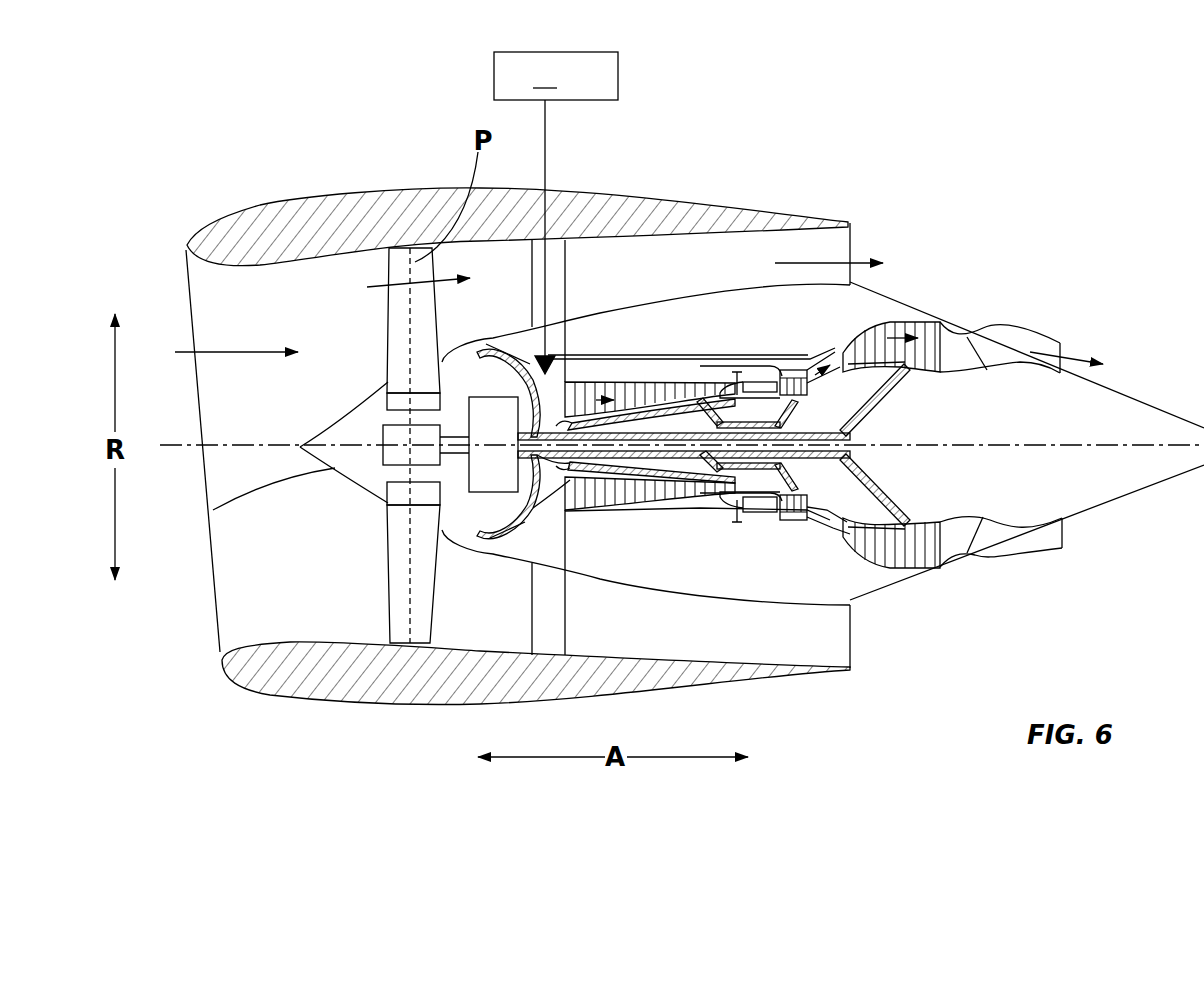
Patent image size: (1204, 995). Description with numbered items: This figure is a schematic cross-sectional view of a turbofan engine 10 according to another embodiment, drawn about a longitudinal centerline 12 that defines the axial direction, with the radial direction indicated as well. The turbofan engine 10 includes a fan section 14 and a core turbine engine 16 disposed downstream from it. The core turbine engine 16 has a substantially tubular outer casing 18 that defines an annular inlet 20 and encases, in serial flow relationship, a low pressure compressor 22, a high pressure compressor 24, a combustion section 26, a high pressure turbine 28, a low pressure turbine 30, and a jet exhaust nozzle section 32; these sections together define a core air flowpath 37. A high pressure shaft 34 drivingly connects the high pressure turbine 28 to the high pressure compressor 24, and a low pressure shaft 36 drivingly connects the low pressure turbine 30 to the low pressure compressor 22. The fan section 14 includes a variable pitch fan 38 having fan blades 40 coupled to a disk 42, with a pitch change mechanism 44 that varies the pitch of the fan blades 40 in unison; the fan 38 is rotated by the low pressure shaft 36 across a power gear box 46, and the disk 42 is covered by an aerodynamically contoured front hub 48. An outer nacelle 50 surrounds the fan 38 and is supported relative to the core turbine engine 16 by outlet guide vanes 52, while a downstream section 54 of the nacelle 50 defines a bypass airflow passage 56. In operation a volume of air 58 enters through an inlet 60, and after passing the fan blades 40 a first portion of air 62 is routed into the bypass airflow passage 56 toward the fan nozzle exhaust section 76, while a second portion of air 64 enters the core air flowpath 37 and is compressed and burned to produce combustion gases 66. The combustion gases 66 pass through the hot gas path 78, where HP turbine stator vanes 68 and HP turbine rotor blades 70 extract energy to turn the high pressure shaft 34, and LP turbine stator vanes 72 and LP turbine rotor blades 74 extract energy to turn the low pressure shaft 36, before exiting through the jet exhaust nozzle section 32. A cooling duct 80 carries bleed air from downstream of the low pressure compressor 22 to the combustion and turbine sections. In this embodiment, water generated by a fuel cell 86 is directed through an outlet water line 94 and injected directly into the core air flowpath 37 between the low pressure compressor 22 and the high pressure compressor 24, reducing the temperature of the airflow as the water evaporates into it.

The turbofan engine 10 is at (987, 203).
The longitudinal centerline 12 is at (1005, 443).
The fan section 14 is at (349, 275).
The core turbine engine 16 is at (682, 343).
The outer casing 18 is at (713, 600).
The annular inlet 20 is at (474, 546).
The low pressure compressor 22 is at (530, 495).
The high pressure compressor 24 is at (594, 503).
The combustion section 26 is at (753, 515).
The high pressure turbine 28 is at (812, 512).
The low pressure turbine 30 is at (926, 565).
The jet exhaust nozzle section 32 is at (984, 548).
The high pressure shaft 34 is at (795, 396).
The low pressure shaft 36 is at (880, 410).
The core air flowpath 37 is at (560, 507).
The variable pitch fan 38 is at (353, 498).
The fan blades 40 is at (385, 585).
The disk 42 is at (405, 402).
The pitch change mechanism 44 is at (383, 428).
The power gear box 46 is at (556, 360).
The front hub 48 is at (213, 510).
The outer nacelle 50 is at (430, 703).
The outlet guide vanes 52 is at (565, 262).
The downstream section of the nacelle 54 is at (800, 225).
The bypass airflow passage 56 is at (707, 275).
The volume of air 58 is at (238, 345).
The inlet 60 is at (218, 650).
The first portion of air 62 is at (811, 262).
The second portion of air 64 is at (468, 332).
The combustion gases 66 is at (888, 340).
The HP turbine stator vanes 68 is at (771, 514).
The HP turbine rotor blades 70 is at (790, 497).
The LP turbine stator vanes 72 is at (857, 557).
The LP turbine rotor blades 74 is at (857, 557).
The fan nozzle exhaust section 76 is at (838, 247).
The hot gas path 78 is at (836, 354).
The cooling duct 80 is at (667, 340).
The fuel cell 86 is at (556, 204).
The outlet water line 94 is at (548, 152).